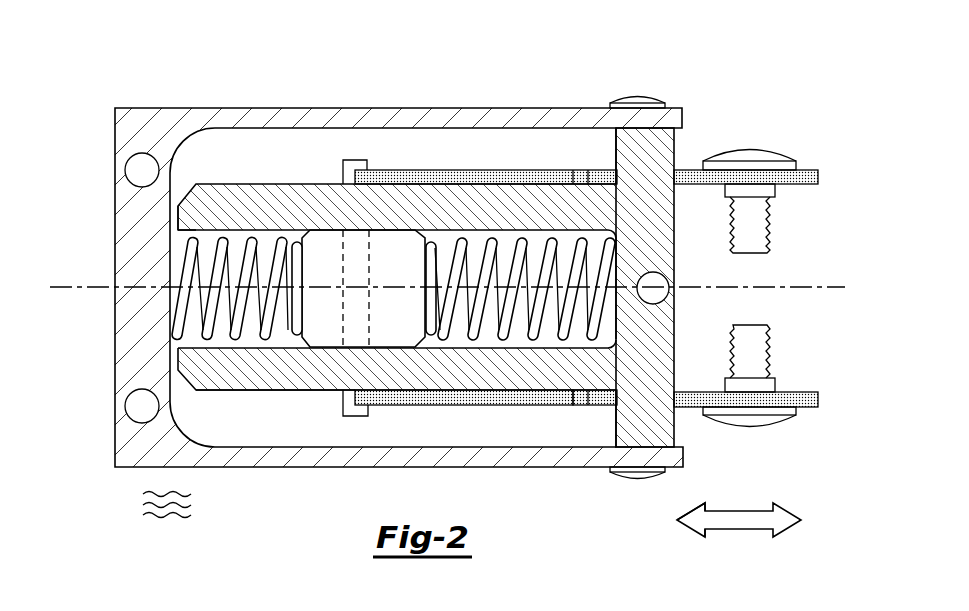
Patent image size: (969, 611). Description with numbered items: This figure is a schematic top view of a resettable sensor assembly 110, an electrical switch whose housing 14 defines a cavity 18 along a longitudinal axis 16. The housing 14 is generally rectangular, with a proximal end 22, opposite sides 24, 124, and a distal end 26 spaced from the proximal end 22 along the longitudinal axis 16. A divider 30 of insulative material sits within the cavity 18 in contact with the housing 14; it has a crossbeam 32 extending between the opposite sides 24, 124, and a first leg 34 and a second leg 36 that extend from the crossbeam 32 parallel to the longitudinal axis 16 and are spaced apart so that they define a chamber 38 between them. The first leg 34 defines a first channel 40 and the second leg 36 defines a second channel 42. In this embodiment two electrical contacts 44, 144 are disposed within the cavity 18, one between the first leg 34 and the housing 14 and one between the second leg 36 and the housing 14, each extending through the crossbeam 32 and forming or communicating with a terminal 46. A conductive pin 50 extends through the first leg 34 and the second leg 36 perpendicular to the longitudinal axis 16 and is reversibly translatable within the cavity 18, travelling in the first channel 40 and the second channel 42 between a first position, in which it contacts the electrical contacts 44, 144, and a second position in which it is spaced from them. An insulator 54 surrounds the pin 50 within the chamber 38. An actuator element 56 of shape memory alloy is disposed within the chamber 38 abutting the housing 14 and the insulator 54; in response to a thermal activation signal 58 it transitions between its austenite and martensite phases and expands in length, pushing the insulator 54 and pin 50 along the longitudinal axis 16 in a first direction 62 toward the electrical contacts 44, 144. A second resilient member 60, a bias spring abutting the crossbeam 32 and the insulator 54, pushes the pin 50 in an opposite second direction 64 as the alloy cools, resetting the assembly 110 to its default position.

The resettable sensor assembly 110 is at (125, 57).
The housing 14 is at (218, 108).
The opposite side 24 is at (314, 116).
The proximal end 22 is at (125, 353).
The opposite side 124 is at (327, 458).
The crossbeam 32 is at (648, 140).
The distal end 26 is at (682, 116).
The divider 30 is at (630, 438).
The first channel 40 is at (447, 146).
The second leg 36 is at (276, 383).
The chamber 38 is at (188, 238).
The second channel 42 is at (302, 398).
The first leg 34 is at (495, 196).
The second resilient member 60 is at (500, 348).
The second electrical contact 144 is at (437, 399).
The electrical contact 44 is at (394, 170).
The pin 50 is at (356, 413).
The terminal 46 is at (818, 177).
The insulator 54 is at (402, 275).
The actuator element 56 is at (202, 337).
The cavity 18 is at (579, 323).
The longitudinal axis 16 is at (72, 287).
The thermal activation signal 58 is at (165, 520).
The first direction 62 is at (765, 531).
The second direction 64 is at (712, 531).